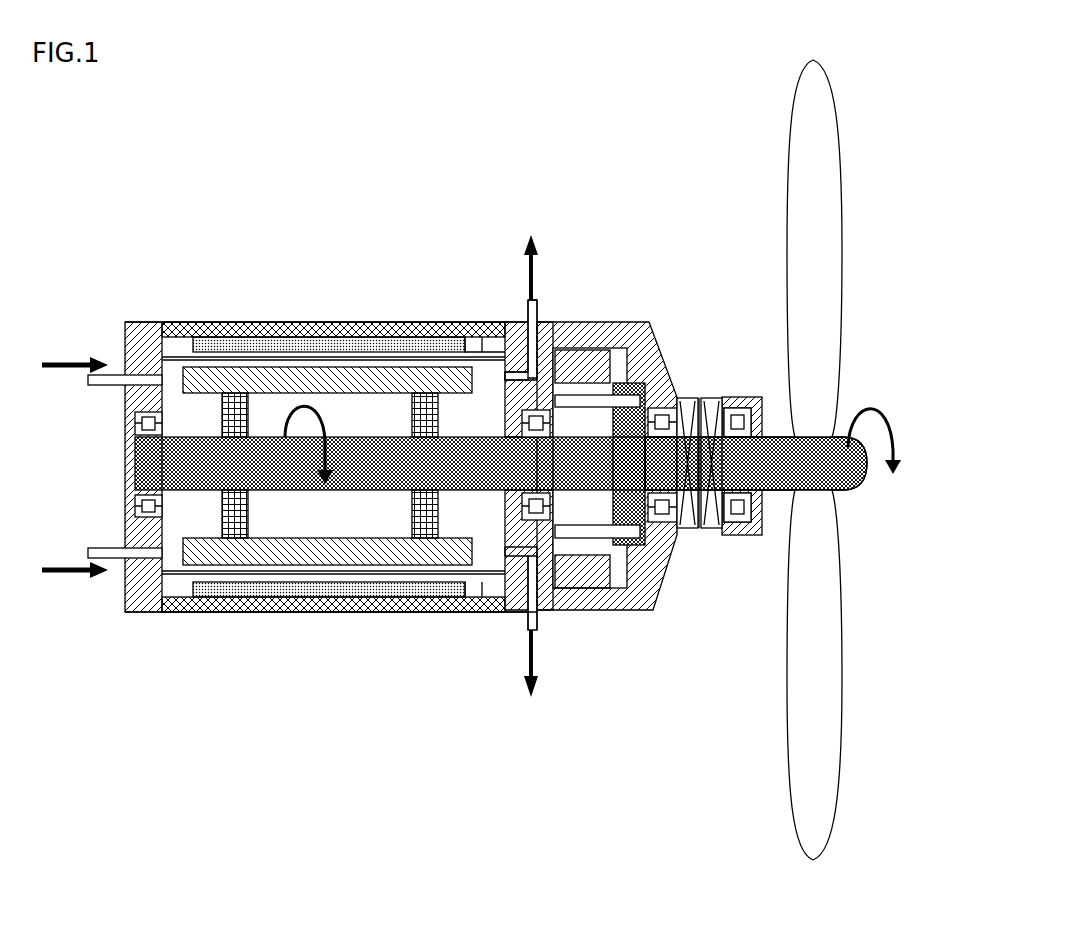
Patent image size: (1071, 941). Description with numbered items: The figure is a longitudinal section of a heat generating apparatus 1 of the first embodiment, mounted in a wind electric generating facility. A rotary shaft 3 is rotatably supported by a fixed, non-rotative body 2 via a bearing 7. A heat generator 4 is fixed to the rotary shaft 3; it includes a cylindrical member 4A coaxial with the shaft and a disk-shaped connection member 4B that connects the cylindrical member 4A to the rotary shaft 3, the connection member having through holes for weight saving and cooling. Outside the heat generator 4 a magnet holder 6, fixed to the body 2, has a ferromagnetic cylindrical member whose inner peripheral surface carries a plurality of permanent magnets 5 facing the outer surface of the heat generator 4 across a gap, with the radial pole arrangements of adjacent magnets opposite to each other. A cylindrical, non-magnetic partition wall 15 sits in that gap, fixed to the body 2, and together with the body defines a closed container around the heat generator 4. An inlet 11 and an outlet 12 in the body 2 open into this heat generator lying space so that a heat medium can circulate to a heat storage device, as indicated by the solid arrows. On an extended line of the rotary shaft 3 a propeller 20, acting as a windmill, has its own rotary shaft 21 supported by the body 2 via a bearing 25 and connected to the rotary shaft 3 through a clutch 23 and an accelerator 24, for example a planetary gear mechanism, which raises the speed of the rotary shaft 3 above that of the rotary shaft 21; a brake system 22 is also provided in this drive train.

The heat generating apparatus 1 is at (183, 303).
The body 2 is at (127, 322).
The rotary shaft 3 is at (138, 450).
The heat generator 4 is at (503, 258).
The cylindrical member 4A is at (478, 322).
The connection member 4B is at (448, 322).
The permanent magnet 5 is at (193, 345).
The magnet holder 6 is at (323, 322).
The bearing 7 is at (136, 500).
The inlet 11 is at (88, 380).
The outlet 12 is at (535, 300).
The partition wall 15 is at (480, 612).
The propeller 20 is at (793, 168).
The rotary shaft 21 is at (777, 437).
The brake system 22 is at (712, 398).
The clutch 23 is at (690, 398).
The accelerator 24 is at (578, 362).
The bearing 25 is at (653, 612).